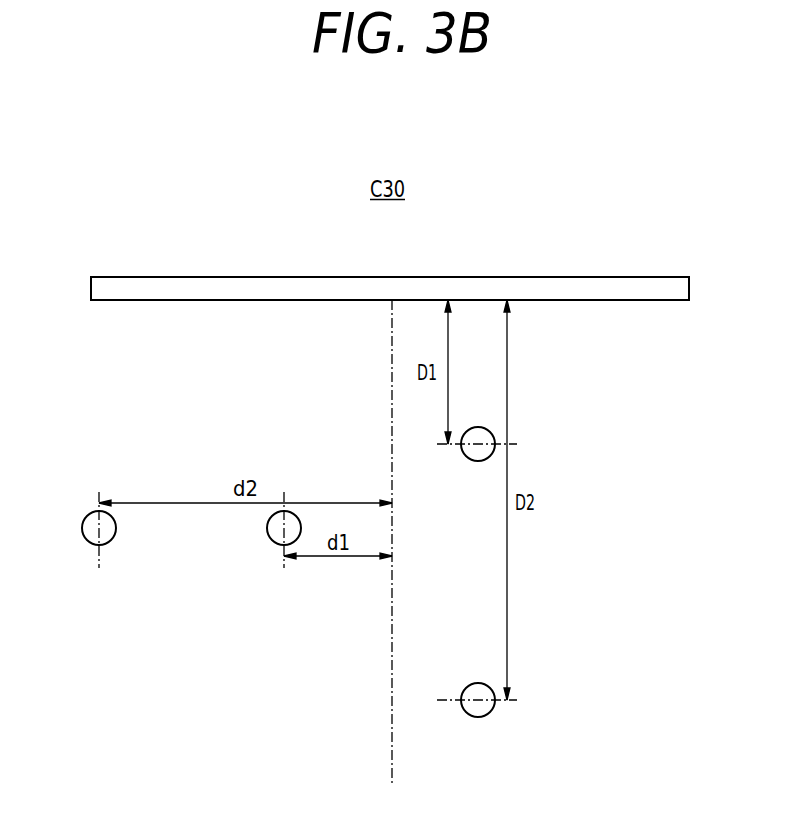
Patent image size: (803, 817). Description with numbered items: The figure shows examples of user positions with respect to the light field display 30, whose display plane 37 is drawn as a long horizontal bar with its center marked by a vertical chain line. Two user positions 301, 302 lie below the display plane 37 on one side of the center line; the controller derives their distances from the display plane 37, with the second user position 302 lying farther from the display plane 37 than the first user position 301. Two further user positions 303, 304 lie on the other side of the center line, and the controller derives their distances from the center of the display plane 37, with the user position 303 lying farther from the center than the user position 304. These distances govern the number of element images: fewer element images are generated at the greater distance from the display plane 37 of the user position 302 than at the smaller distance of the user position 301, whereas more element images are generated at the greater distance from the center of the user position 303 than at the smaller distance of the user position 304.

The light field display 30 is at (678, 291).
The display plane 37 is at (660, 300).
The user position 301 is at (471, 460).
The user position 302 is at (491, 712).
The user position 303 is at (112, 539).
The user position 304 is at (271, 539).